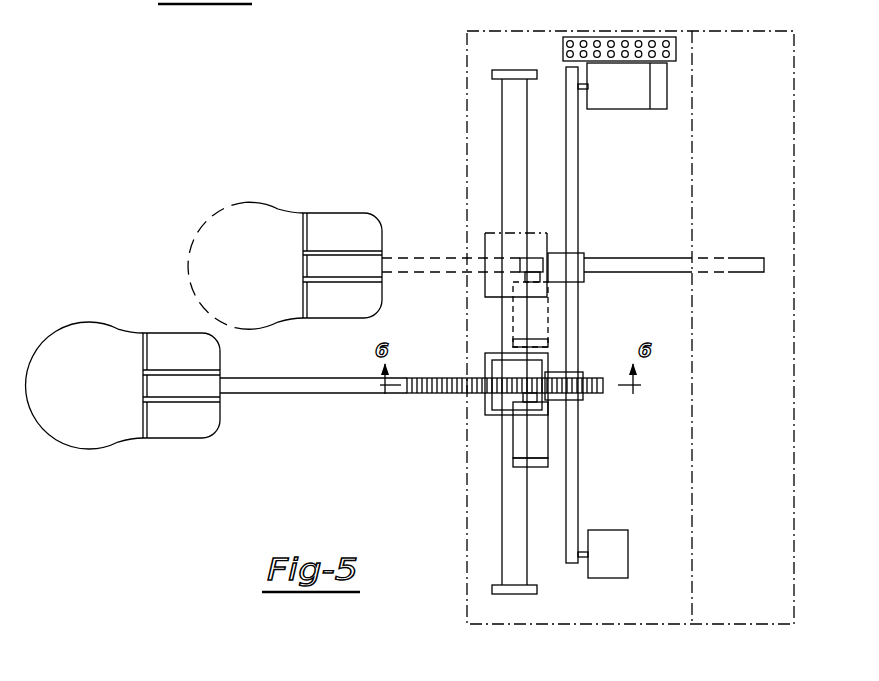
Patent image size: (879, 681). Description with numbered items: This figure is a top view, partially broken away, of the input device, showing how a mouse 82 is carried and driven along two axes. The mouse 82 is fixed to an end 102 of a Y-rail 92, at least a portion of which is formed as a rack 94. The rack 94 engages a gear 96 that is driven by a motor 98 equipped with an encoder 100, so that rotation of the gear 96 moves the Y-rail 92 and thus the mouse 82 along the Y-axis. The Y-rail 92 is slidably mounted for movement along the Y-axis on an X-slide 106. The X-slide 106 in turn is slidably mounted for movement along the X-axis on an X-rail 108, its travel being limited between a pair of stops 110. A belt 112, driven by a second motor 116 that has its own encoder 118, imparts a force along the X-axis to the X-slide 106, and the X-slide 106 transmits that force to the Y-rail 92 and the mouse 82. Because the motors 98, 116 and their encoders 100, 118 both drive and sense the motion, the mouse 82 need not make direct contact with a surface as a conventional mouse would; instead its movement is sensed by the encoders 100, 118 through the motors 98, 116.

The mouse 82 is at (87, 333).
The Y-rail 92 is at (292, 394).
The rack 94 is at (425, 378).
The gear 96 is at (550, 358).
The motor 98 is at (550, 430).
The encoder 100 is at (550, 463).
The end of Y-rail 102 is at (228, 396).
The X-slide 106 is at (488, 232).
The X-rail 108 is at (501, 118).
The stops 110 is at (490, 68).
The belt 112 is at (579, 208).
The motor 116 is at (618, 111).
The encoder 118 is at (669, 82).